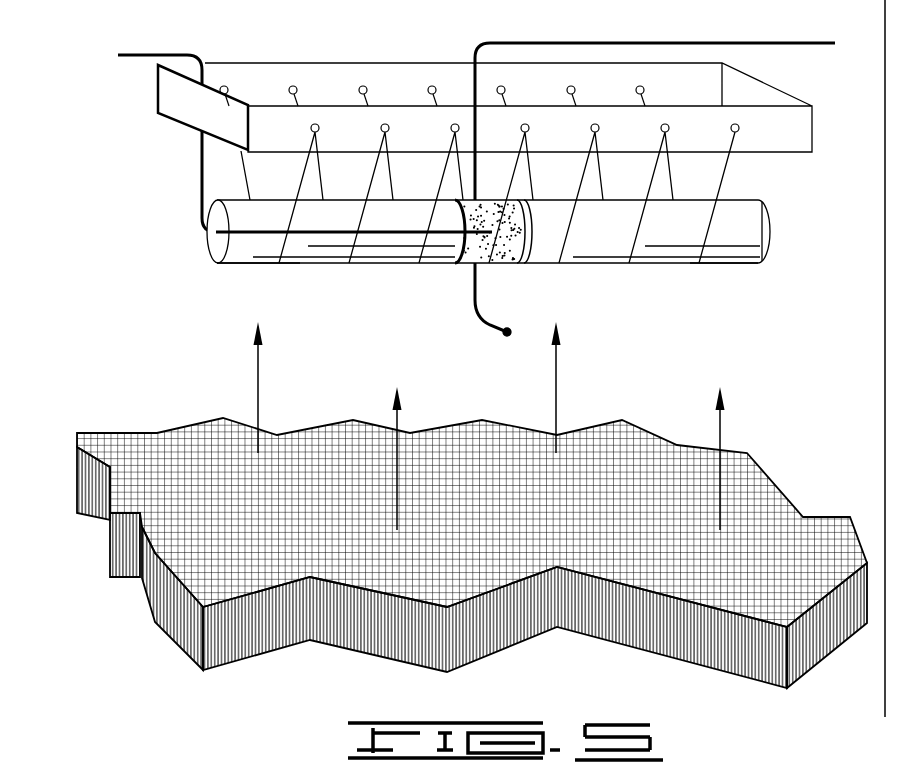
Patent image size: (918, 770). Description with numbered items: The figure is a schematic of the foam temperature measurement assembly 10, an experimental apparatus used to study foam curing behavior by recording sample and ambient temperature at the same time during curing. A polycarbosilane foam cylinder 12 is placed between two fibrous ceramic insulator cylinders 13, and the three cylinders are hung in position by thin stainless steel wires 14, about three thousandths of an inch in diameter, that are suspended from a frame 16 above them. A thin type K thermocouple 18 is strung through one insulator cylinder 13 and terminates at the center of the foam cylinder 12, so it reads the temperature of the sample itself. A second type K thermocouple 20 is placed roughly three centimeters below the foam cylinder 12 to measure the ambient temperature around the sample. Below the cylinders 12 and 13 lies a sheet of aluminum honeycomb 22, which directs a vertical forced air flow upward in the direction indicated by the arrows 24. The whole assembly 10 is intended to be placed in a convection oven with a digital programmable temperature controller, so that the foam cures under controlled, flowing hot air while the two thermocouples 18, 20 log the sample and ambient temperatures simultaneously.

The foam temperature measurement assembly 10 is at (446, 168).
The polycarbosilane foam cylinder 12 is at (507, 267).
The fibrous ceramic insulator cylinders 13 is at (297, 265).
The stainless steel wires 14 is at (238, 157).
The frame 16 is at (760, 95).
The type K thermocouple 18 is at (180, 53).
The second type K thermocouple 20 is at (642, 43).
The sheet of aluminum honeycomb 22 is at (490, 657).
The arrows 24 is at (257, 383).